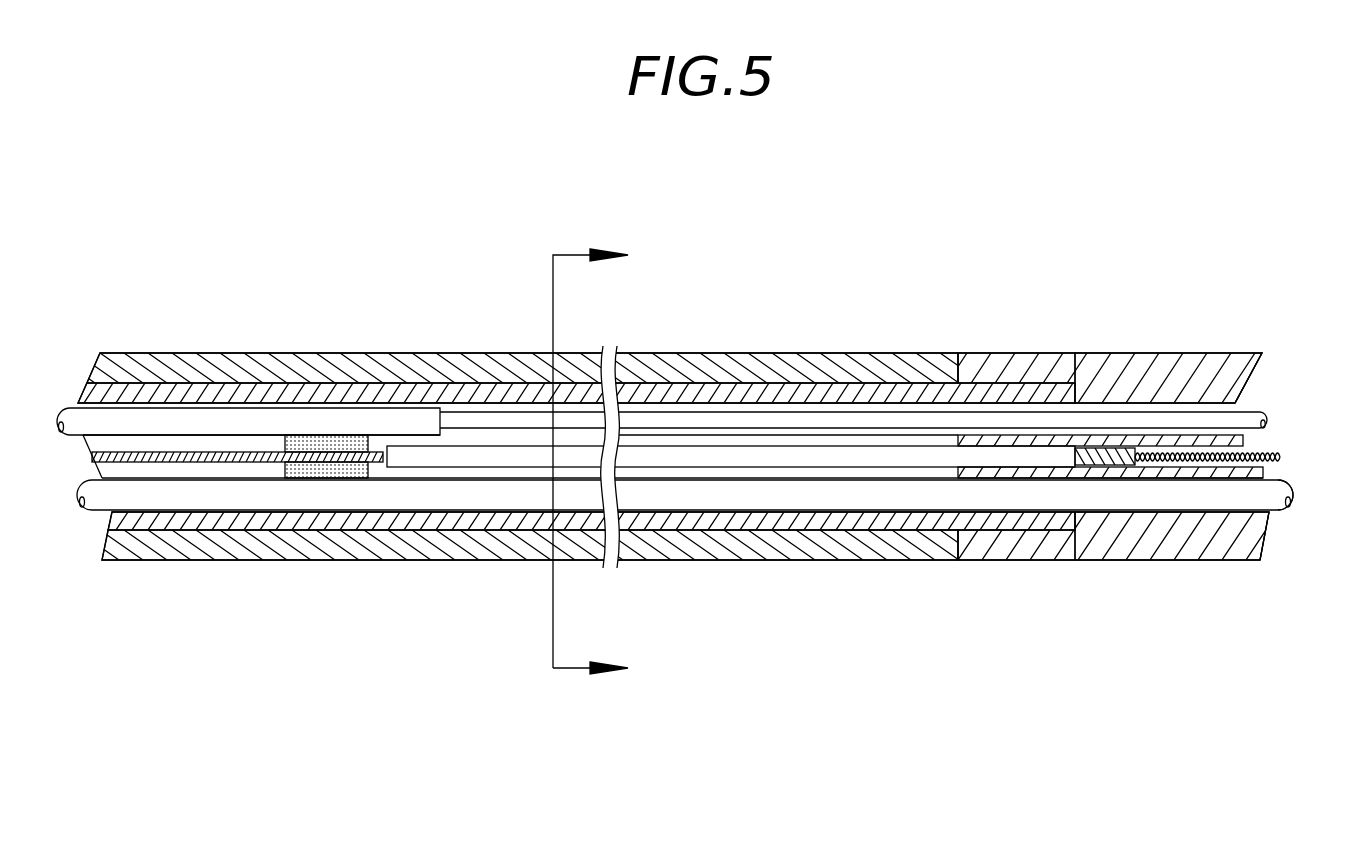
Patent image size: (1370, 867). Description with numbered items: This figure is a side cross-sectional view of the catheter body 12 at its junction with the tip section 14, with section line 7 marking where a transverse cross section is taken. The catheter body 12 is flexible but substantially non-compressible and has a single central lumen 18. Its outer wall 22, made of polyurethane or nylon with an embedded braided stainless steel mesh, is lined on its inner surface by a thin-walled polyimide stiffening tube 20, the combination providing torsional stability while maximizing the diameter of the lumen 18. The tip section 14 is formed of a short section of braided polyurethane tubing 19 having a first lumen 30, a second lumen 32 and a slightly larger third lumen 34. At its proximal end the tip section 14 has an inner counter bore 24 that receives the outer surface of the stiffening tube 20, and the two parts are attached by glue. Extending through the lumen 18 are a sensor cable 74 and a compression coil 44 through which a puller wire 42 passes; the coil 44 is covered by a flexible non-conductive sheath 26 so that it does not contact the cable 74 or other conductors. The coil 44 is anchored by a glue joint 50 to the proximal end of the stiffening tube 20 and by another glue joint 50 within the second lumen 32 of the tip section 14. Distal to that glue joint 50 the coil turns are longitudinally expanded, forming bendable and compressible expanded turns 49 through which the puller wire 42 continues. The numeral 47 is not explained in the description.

The catheter body 12 is at (889, 305).
The tip section 14 is at (1084, 706).
The central lumen 18 is at (513, 437).
The tubing 19 is at (1172, 373).
The stiffening tube 20 is at (805, 392).
The outer wall 22 is at (718, 363).
The inner counter bore 24 is at (1003, 383).
The non-conductive sheath 26 is at (527, 457).
The first lumen 30 is at (1235, 466).
The second lumen 32 is at (1255, 515).
The third lumen 34 is at (1233, 408).
The puller wire 42 is at (1283, 456).
The compression coil 44 is at (247, 453).
The lower lumen tube 47 is at (483, 497).
The expanded turns 49 is at (1278, 455).
The glue joint 50 is at (333, 440).
The sensor cable 74 is at (466, 420).
The section line 7- 7 is at (606, 463).